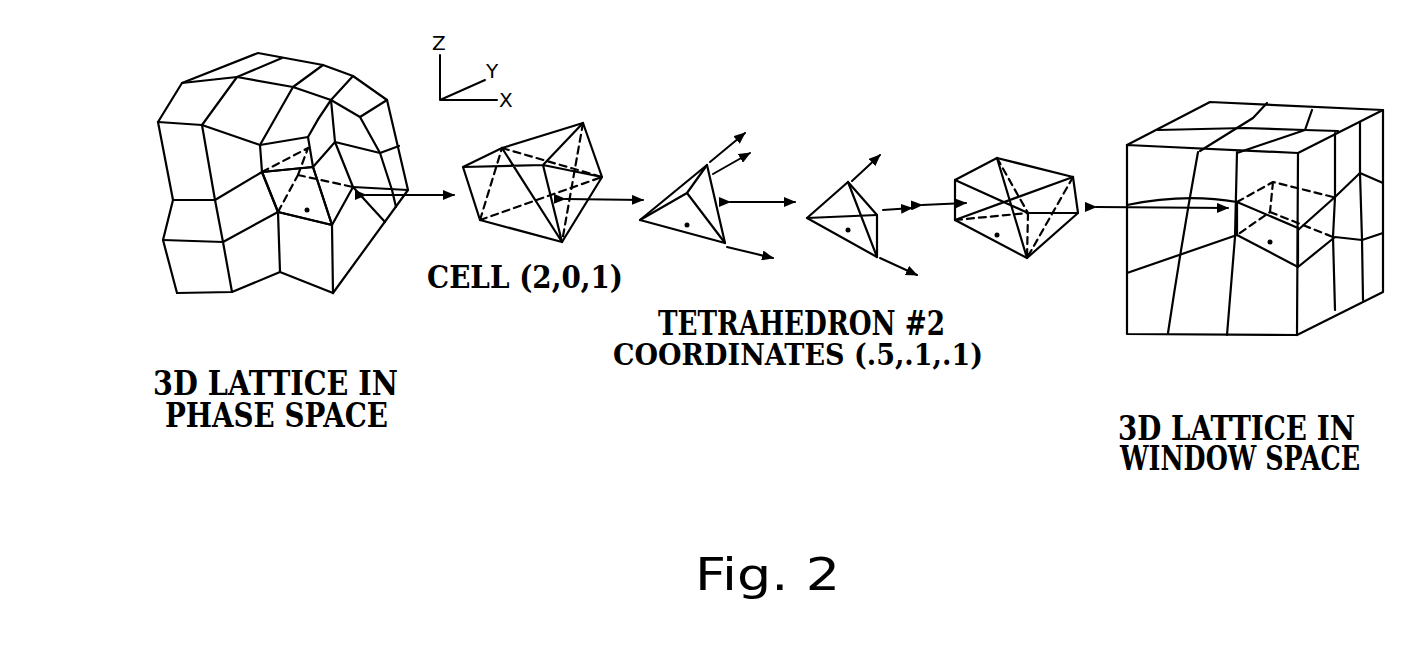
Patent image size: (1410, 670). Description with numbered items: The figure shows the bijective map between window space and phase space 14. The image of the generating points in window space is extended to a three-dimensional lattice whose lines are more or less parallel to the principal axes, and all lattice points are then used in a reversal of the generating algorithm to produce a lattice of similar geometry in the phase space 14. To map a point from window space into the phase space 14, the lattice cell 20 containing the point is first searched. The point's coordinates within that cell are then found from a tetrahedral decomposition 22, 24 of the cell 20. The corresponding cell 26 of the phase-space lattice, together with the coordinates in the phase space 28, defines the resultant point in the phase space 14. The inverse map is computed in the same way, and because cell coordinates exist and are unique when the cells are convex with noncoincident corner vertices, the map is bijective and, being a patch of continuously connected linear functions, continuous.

The phase space 14 is at (162, 199).
The coordinates in the phase space 28 is at (312, 232).
The corresponding cell 26 is at (590, 133).
The tetrahedral decomposition 24 is at (683, 190).
The tetrahedral decomposition 22 is at (832, 190).
The lattice cell 20 is at (1040, 162).